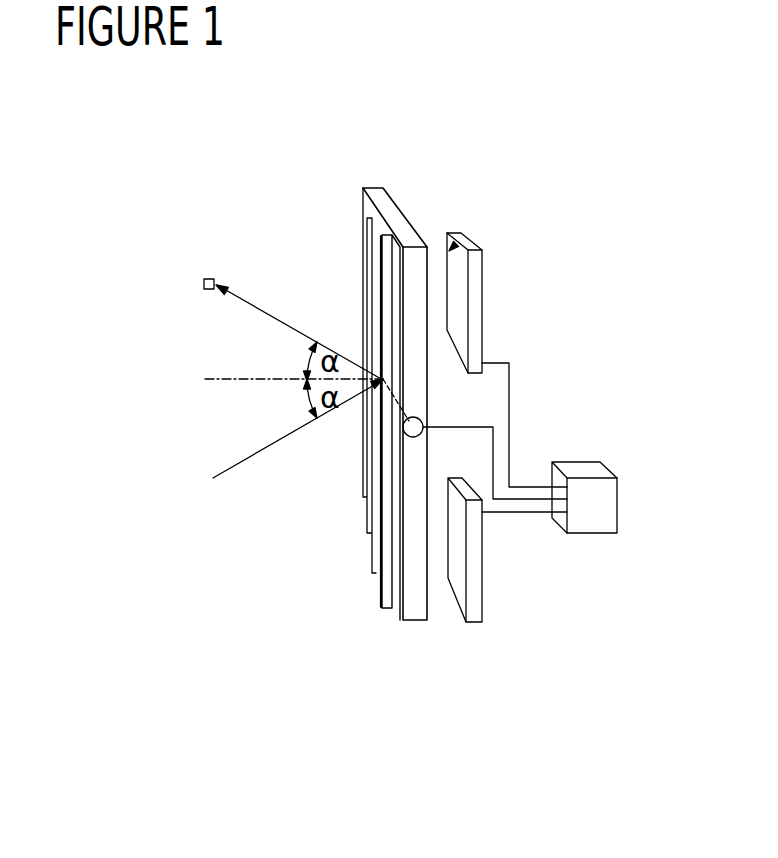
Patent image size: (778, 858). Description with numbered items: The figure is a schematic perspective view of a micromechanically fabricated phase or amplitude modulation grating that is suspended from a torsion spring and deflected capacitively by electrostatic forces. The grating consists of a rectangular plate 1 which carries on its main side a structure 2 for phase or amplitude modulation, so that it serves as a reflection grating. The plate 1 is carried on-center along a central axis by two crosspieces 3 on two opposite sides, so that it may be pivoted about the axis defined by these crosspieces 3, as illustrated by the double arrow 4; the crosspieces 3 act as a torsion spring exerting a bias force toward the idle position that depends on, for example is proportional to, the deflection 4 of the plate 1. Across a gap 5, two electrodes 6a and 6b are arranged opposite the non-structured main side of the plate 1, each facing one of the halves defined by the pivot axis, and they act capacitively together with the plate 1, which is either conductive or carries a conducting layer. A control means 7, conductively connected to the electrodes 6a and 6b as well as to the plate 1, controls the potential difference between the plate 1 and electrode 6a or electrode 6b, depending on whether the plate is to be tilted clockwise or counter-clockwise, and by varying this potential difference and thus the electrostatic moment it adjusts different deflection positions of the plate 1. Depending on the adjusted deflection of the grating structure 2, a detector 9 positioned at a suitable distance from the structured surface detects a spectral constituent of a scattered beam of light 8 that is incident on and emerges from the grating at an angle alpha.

The rectangular plate 1 is at (410, 318).
The structure for phase or amplitude modulation 2 is at (381, 607).
The crosspieces 3 is at (424, 420).
The double arrow 4 is at (363, 217).
The gap 5 is at (449, 251).
The electrode 6a is at (482, 600).
The electrode 6b is at (482, 325).
The control means 7 is at (618, 518).
The scattered beam of light 8 is at (243, 463).
The detector 9 is at (217, 283).